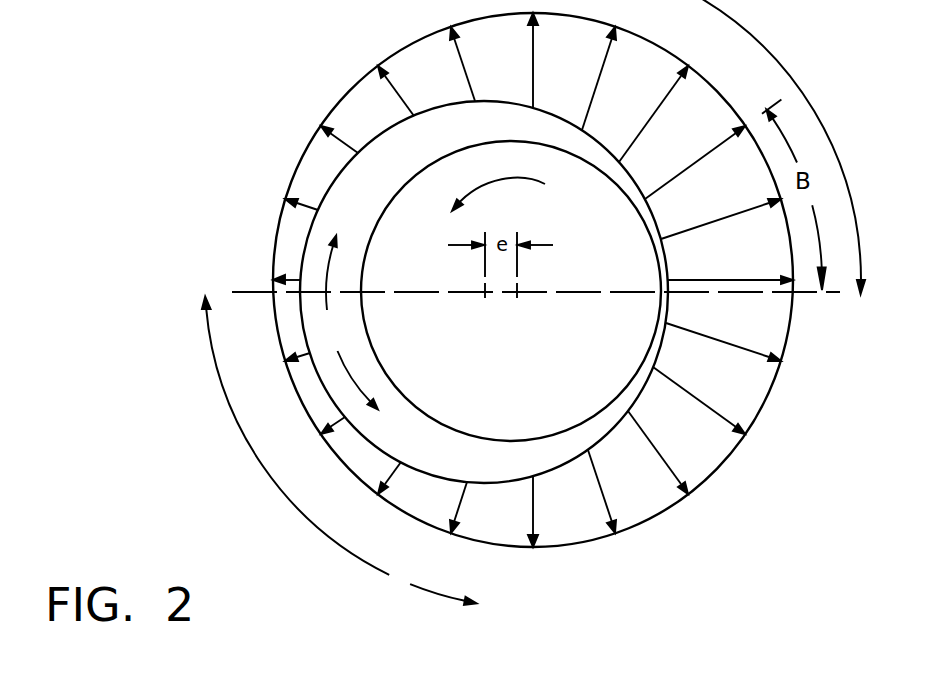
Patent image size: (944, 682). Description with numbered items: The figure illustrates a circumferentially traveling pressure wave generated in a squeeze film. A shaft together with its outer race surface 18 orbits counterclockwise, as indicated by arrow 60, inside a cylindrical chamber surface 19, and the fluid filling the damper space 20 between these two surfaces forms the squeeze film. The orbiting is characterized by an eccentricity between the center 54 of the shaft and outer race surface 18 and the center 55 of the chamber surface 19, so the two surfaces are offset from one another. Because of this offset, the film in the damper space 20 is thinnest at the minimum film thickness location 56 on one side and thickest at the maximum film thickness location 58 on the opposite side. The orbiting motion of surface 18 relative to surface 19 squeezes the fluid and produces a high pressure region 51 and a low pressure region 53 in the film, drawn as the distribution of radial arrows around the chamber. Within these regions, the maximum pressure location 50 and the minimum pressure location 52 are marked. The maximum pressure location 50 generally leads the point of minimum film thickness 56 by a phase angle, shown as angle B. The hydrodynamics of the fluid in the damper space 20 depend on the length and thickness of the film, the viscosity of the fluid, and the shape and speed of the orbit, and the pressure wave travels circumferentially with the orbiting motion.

The outer race surface 18 is at (483, 143).
The chamber surface 19 is at (326, 190).
The damper space 20 is at (348, 322).
The maximum pressure location 50 is at (746, 122).
The high pressure region 51 is at (727, 1).
The minimum pressure location 52 is at (322, 437).
The low pressure region 53 is at (273, 480).
The center of shaft and outer race surface 54 is at (516, 288).
The center of chamber surface 55 is at (484, 286).
The minimum film thickness 56 is at (667, 299).
The maximum film thickness 58 is at (310, 302).
The orbiting direction arrow 60 is at (517, 193).